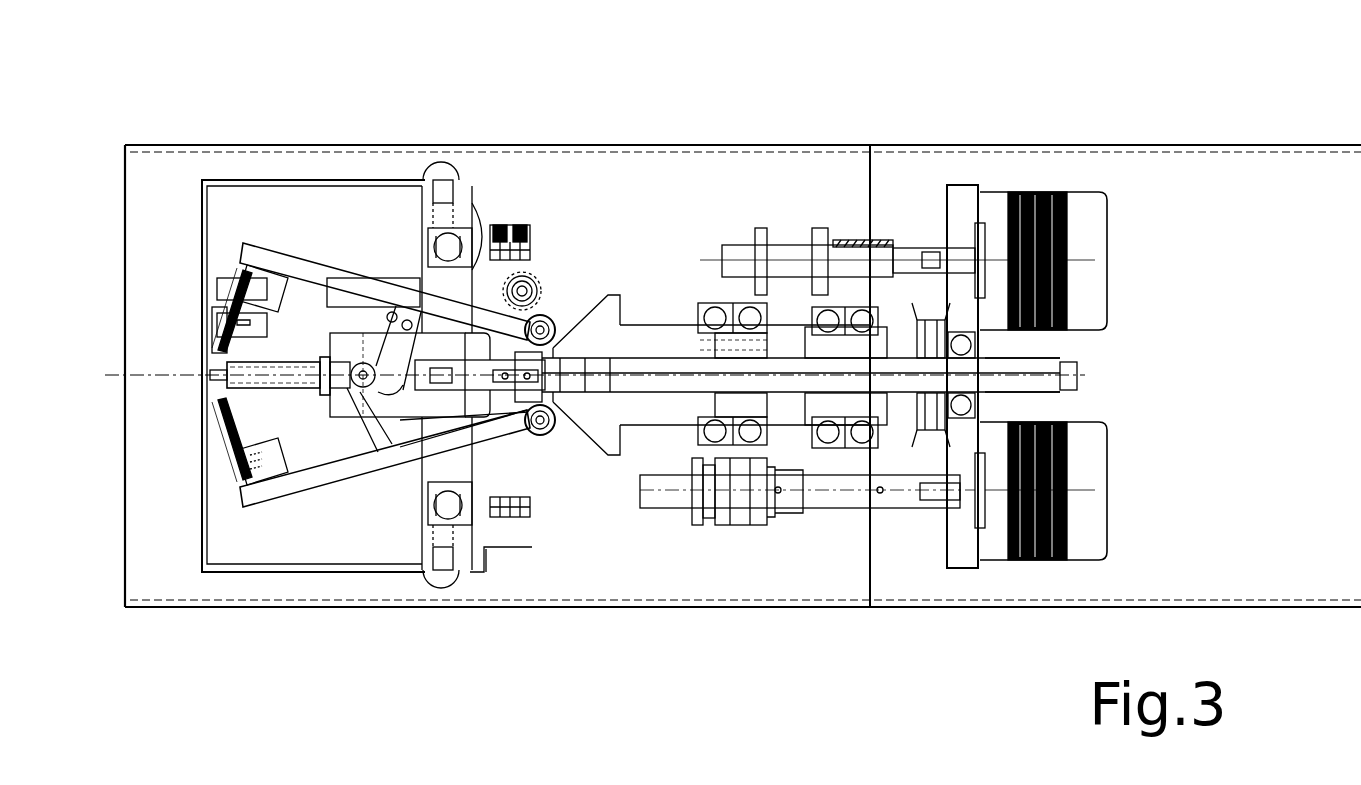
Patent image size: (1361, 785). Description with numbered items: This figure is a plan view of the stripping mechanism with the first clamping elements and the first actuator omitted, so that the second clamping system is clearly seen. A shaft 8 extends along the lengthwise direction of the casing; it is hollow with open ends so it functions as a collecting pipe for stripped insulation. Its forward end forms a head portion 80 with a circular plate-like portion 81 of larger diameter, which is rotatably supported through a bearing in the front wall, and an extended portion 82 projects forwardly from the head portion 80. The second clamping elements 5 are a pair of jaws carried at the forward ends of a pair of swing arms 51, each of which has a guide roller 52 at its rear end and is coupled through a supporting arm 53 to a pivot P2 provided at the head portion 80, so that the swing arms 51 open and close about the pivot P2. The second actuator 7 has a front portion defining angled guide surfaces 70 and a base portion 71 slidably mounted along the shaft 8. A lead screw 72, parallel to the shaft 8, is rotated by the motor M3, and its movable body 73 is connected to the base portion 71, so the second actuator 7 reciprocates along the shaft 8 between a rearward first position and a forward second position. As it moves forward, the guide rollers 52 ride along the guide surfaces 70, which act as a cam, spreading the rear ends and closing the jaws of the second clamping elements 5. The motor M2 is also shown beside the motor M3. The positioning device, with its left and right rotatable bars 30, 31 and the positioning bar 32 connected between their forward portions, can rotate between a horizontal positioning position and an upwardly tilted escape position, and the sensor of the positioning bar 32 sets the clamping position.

The rotatable bar 30 is at (268, 573).
The rotatable bar 31 is at (268, 180).
The positioning bar 32 is at (202, 243).
The second clamping elements 5 is at (218, 343).
The swing arm 51 is at (306, 266).
The guide roller 52 is at (548, 316).
The supporting arm 53 is at (348, 430).
The second actuator 7 is at (620, 285).
The angled guide surfaces 70 is at (593, 307).
The base portion 71 is at (673, 325).
The lead screw 72 is at (858, 497).
The movable body 73 is at (730, 457).
The shaft 8 is at (1038, 360).
The head portion 80 is at (382, 403).
The circular plate-like portion 81 is at (448, 290).
The extended portion 82 is at (247, 373).
The pivot P2 is at (352, 362).
The motor M2 is at (1095, 233).
The motor M3 is at (1093, 508).